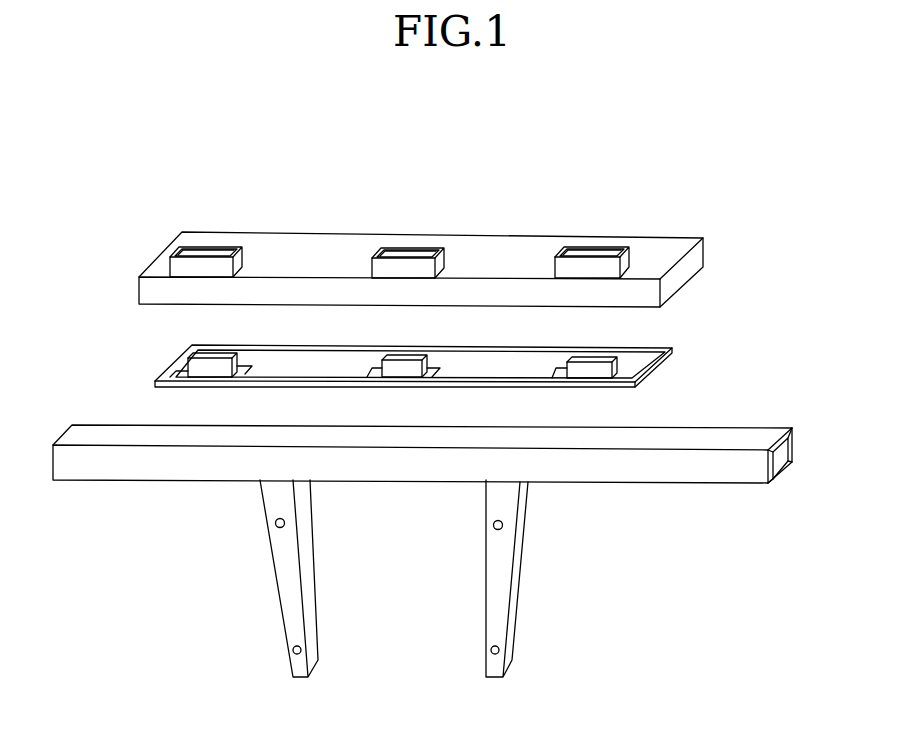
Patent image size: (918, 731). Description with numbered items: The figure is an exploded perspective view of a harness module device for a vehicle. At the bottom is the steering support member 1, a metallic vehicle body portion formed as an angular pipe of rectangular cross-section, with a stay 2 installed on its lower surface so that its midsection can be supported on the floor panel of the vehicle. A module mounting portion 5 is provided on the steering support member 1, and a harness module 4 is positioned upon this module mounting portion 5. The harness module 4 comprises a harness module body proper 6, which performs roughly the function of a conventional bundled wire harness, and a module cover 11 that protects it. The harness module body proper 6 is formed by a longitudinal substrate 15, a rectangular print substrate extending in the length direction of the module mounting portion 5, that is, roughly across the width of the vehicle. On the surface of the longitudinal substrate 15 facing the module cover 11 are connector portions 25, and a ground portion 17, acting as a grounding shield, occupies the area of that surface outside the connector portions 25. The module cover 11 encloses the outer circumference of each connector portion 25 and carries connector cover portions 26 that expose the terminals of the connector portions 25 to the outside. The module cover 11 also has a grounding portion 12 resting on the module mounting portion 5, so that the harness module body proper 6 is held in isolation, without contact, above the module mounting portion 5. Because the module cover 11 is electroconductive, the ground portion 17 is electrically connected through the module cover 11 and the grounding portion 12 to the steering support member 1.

The steering support member 1 is at (80, 476).
The stay 2 is at (286, 605).
The harness module 4 is at (751, 251).
The module mounting portion 5 is at (758, 440).
The harness module body proper 6 is at (93, 346).
The module cover 11 is at (322, 240).
The grounding portion 12 is at (508, 304).
The longitudinal substrate 15 is at (168, 372).
The ground portion 17 is at (637, 358).
The connector portion 25 is at (165, 373).
The connector cover portion 26 is at (240, 262).